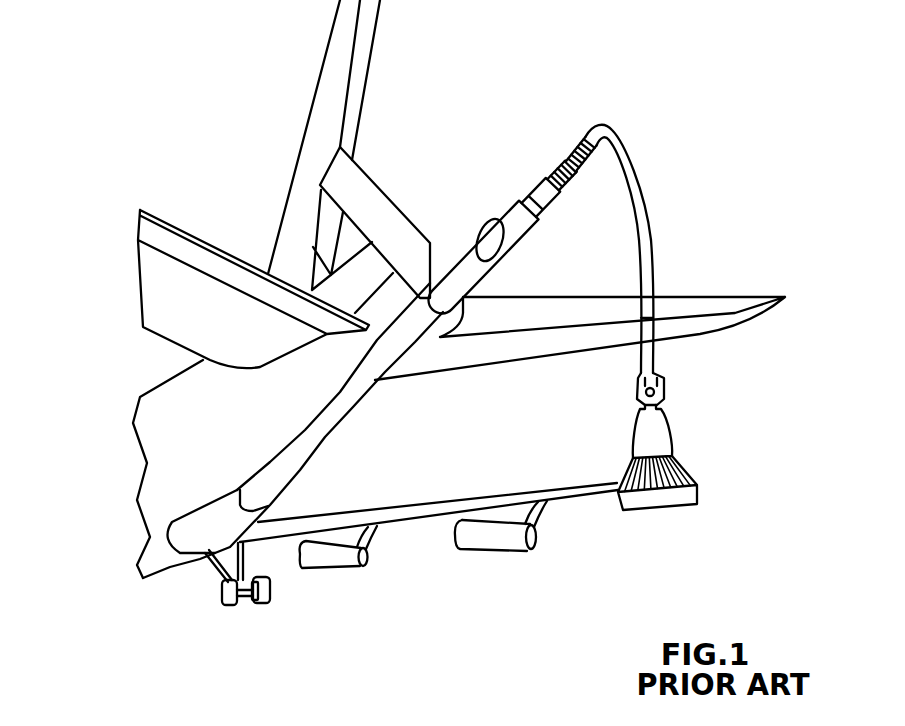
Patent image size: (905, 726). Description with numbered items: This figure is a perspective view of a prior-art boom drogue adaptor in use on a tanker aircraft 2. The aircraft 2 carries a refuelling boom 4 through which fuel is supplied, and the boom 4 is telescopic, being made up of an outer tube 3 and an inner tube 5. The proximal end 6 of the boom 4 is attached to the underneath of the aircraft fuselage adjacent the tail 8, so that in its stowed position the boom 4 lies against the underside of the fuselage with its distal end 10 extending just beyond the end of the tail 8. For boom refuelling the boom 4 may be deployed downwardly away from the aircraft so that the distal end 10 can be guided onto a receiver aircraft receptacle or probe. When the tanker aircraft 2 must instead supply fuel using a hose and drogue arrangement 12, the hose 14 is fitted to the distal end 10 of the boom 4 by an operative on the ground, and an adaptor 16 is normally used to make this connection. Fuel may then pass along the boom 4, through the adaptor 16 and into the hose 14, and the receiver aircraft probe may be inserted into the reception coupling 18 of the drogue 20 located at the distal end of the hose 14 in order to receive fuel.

The aircraft 2 is at (127, 505).
The outer tube 3 is at (307, 447).
The refuelling boom 4 is at (357, 410).
The inner tube 5 is at (500, 223).
The proximal end 6 is at (255, 493).
The tail 8 is at (231, 229).
The distal end 10 is at (467, 193).
The hose and drogue arrangement 12 is at (652, 248).
The hose 14 is at (619, 146).
The adaptor 16 is at (534, 172).
The reception coupling 18 is at (652, 438).
The drogue 20 is at (617, 523).